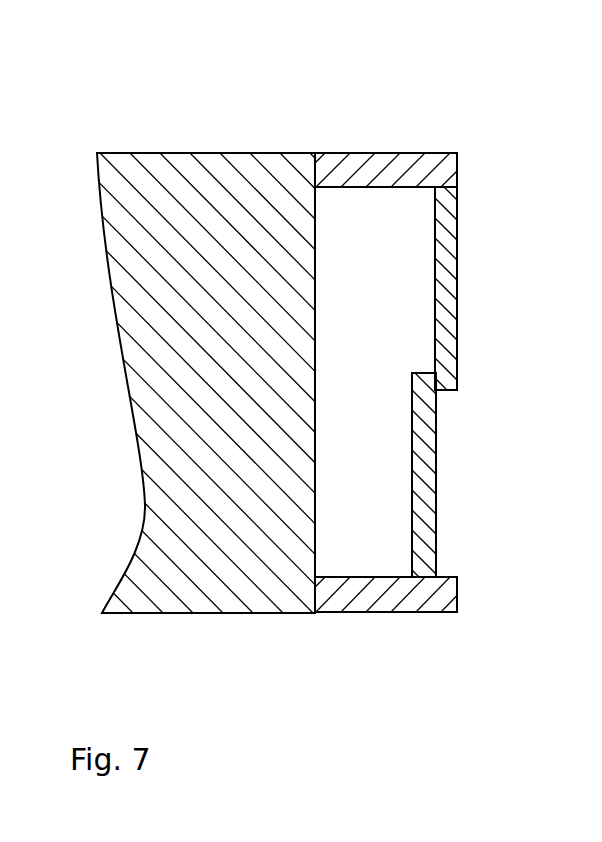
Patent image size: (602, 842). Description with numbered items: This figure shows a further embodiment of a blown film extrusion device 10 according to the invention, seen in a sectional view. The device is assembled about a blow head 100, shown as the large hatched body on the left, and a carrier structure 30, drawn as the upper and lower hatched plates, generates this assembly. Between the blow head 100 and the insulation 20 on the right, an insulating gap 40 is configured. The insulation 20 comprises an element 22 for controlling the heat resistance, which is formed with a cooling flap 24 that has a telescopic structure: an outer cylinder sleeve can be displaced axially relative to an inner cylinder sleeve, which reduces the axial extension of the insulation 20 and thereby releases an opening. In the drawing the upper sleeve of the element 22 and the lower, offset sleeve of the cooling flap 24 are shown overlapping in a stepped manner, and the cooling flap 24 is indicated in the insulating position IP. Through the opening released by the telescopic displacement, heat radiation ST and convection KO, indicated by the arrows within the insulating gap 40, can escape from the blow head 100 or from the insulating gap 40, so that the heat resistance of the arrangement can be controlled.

The blow head 100 is at (148, 158).
The blown film extrusion device 10 is at (388, 108).
The insulation 20 is at (495, 363).
The element for controlling the heat resistance 22 is at (457, 253).
The cooling flap 24 is at (453, 352).
The carrier structure 30 is at (322, 152).
The insulating gap 40 is at (357, 200).
The convection KO is at (387, 236).
The heat radiation ST is at (380, 379).
The insulating position IP is at (490, 302).